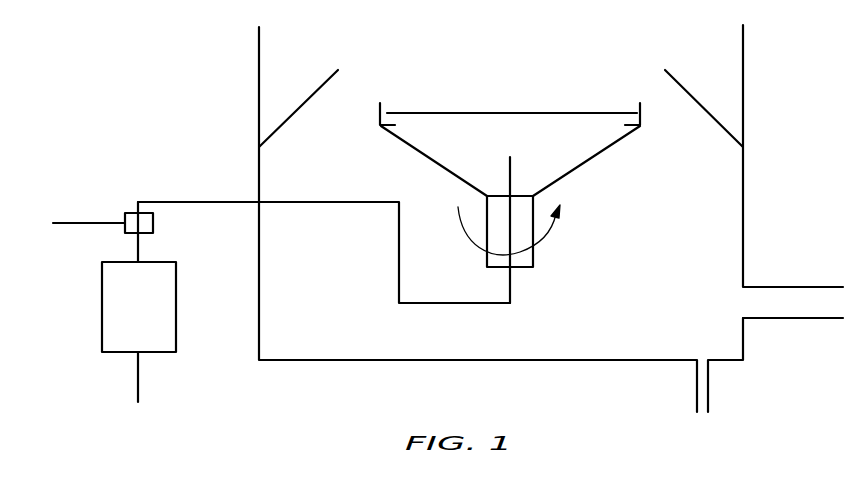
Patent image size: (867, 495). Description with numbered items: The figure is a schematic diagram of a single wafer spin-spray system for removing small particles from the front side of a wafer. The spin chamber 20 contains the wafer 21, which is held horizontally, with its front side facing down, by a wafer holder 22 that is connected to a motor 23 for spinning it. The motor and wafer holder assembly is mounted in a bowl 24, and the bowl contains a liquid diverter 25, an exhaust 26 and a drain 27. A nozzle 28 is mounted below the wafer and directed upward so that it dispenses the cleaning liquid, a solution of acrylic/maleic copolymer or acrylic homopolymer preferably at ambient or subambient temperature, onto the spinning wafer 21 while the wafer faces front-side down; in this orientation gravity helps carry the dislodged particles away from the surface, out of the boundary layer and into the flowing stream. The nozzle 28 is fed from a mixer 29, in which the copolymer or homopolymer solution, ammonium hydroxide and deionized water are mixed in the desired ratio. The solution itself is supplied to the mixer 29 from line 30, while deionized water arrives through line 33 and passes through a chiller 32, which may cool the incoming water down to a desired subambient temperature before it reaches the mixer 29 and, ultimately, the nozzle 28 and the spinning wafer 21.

The spin chamber 20 is at (208, 110).
The wafer 21 is at (440, 112).
The wafer holder 22 is at (640, 117).
The motor 23 is at (523, 203).
The bowl 24 is at (743, 212).
The liquid diverter 25 is at (707, 112).
The exhaust 26 is at (783, 318).
The drain 27 is at (693, 388).
The nozzle 28 is at (512, 168).
The mixer 29 is at (155, 223).
The line 30 is at (72, 225).
The chiller 32 is at (110, 325).
The line 33 is at (140, 380).